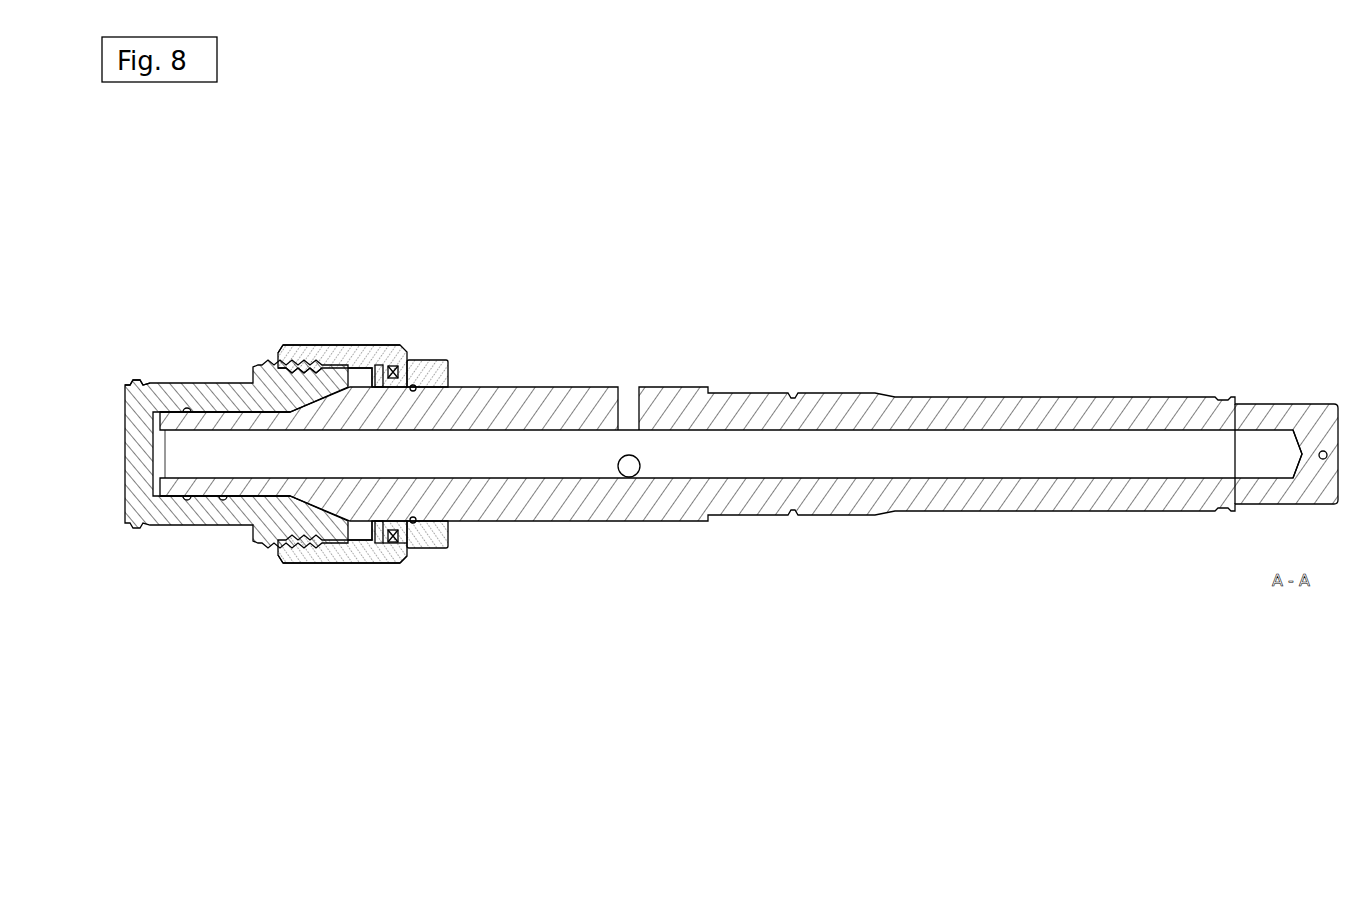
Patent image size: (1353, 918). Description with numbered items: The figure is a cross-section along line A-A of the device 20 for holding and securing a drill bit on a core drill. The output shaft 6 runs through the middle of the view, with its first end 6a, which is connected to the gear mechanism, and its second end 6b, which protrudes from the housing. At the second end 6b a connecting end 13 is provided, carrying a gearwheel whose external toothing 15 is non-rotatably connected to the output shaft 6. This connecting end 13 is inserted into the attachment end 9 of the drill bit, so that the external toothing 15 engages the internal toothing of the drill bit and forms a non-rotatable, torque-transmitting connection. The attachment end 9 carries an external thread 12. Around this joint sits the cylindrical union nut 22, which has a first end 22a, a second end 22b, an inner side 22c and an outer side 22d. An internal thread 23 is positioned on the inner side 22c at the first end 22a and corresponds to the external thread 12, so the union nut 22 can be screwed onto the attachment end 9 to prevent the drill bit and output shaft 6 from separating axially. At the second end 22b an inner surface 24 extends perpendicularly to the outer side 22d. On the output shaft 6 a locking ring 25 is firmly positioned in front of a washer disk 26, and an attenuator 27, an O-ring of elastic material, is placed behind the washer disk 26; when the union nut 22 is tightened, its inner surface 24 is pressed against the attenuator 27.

The output shaft 6 is at (575, 390).
The first end 6a is at (1273, 408).
The second end 6b is at (170, 458).
The attachment end 9 is at (130, 382).
The external thread 12 is at (282, 365).
The connecting end 13 is at (230, 418).
The external toothing 15 is at (203, 498).
The device 20 is at (379, 288).
The union nut 22 is at (407, 345).
The first end 22a is at (285, 345).
The second end 22b is at (442, 362).
The inner side 22c is at (360, 362).
The outer side 22d is at (308, 562).
The internal thread 23 is at (298, 348).
The inner surface 24 is at (410, 362).
The locking ring 25 is at (373, 543).
The washer disk 26 is at (405, 560).
The attenuator 27 is at (392, 550).